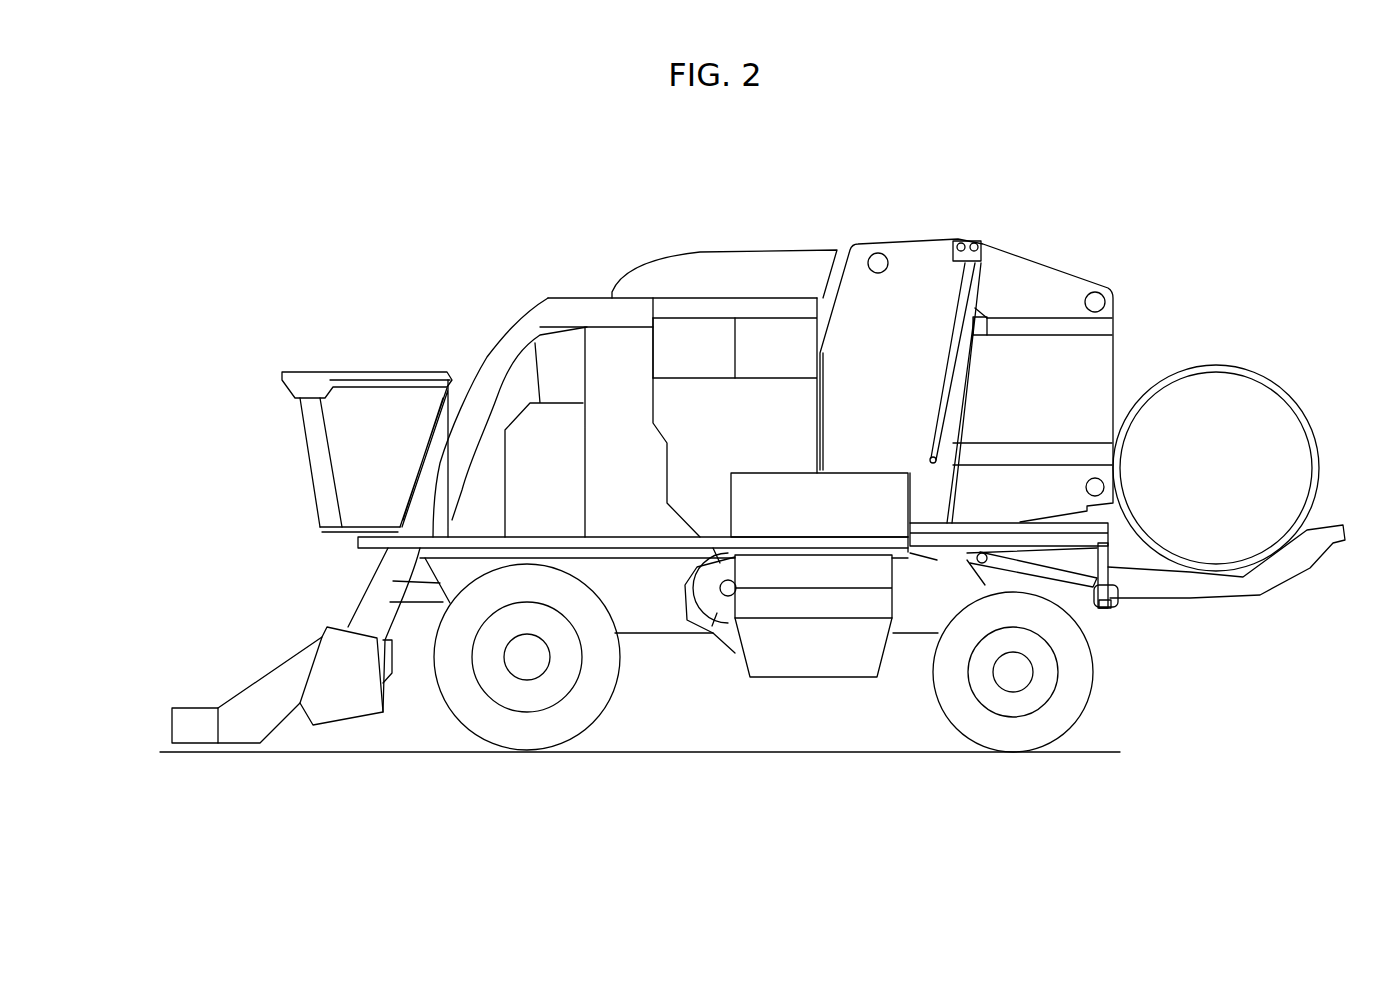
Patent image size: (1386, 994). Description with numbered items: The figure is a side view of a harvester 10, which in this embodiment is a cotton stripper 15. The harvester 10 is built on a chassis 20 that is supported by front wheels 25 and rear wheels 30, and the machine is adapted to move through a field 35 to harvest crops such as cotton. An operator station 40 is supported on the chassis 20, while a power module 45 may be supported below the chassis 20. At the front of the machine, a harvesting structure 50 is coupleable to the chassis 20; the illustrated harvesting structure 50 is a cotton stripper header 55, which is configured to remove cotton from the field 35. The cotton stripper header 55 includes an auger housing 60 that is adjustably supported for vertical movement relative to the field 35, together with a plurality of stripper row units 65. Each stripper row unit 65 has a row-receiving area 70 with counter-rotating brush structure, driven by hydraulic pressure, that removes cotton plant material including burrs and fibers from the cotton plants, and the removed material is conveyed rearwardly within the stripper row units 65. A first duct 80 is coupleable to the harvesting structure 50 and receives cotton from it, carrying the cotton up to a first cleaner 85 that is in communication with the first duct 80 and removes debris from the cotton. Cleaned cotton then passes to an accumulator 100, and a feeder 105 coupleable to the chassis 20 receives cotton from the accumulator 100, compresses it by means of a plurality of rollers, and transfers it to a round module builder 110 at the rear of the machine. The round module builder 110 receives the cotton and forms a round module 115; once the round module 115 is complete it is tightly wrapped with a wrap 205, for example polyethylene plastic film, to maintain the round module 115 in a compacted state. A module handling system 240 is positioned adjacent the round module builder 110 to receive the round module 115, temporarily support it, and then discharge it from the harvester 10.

The harvester 10 is at (404, 185).
The cotton stripper 15 is at (468, 227).
The chassis 20 is at (360, 548).
The front wheels 25 is at (528, 733).
The rear wheels 30 is at (985, 730).
The field 35 is at (805, 757).
The operator station 40 is at (330, 375).
The power module 45 is at (785, 655).
The harvesting structure 50 is at (207, 591).
The cotton stripper header 55 is at (178, 631).
The auger housing 60 is at (342, 703).
The stripper row units 65 is at (270, 705).
The row-receiving area 70 is at (162, 727).
The first duct 80 is at (373, 617).
The first cleaner 85 is at (543, 448).
The accumulator 100 is at (793, 357).
The feeder 105 is at (705, 425).
The round module builder 110 is at (1049, 165).
The round module 115 is at (1232, 392).
The wrap 205 is at (1288, 378).
The module handling system 240 is at (1267, 580).